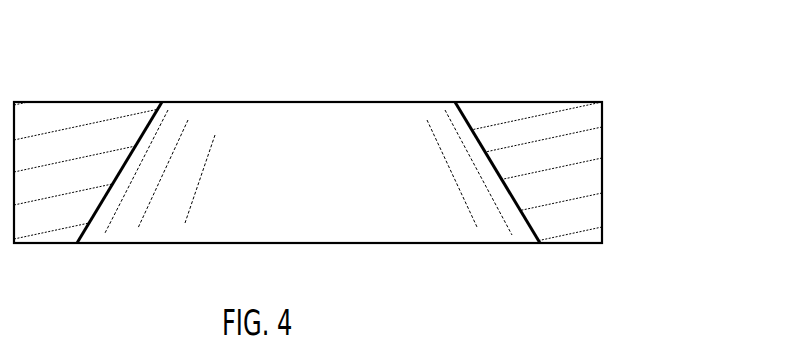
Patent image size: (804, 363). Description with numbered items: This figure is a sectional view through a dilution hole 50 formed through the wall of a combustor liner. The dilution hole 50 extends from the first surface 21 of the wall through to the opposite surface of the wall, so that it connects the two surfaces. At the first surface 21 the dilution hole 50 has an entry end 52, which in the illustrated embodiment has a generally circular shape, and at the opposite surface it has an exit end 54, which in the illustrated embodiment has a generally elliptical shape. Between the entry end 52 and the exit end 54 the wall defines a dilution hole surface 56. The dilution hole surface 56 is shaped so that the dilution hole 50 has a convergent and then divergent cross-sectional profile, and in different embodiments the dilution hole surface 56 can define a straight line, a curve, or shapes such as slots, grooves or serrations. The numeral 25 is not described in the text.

The dilution hole 50 is at (413, 50).
The first surface 21 is at (100, 102).
The second member 25 is at (33, 245).
The entry end 52 is at (220, 102).
The exit end 54 is at (473, 243).
The dilution hole surface 56 is at (394, 174).